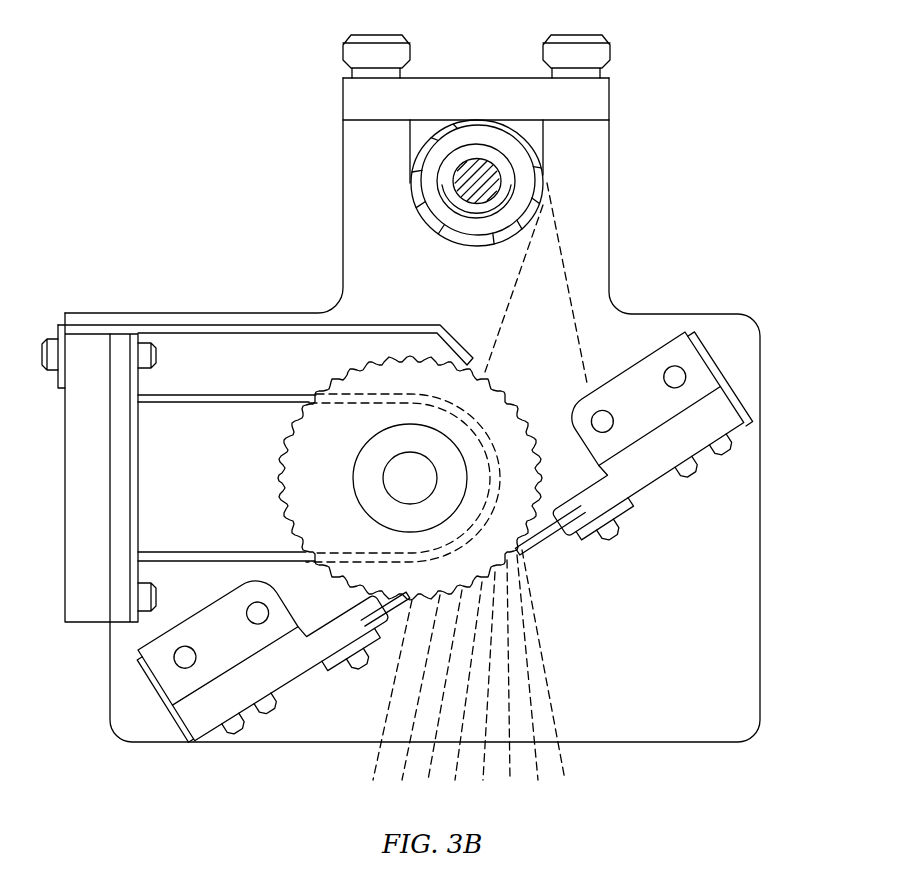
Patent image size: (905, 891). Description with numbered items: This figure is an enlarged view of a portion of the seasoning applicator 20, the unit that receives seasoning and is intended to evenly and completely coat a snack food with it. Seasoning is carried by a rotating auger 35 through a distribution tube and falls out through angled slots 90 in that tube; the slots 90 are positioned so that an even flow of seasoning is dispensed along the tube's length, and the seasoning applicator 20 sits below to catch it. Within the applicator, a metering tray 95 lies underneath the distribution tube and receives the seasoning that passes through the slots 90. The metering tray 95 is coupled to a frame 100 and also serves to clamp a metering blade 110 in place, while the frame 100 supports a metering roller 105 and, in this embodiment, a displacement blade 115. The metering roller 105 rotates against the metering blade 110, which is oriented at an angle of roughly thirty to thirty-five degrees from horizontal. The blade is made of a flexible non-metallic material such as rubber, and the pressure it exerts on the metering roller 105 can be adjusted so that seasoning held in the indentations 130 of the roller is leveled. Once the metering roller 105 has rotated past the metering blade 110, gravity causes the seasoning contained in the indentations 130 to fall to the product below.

The seasoning applicator 20 is at (220, 95).
The auger 35 is at (497, 238).
The slots 90 is at (410, 193).
The frame 100 is at (611, 208).
The metering roller 105 is at (280, 501).
The indentations 130 is at (278, 466).
The metering tray 95 is at (584, 487).
The metering blade 110 is at (540, 536).
The displacement blade 115 is at (398, 620).